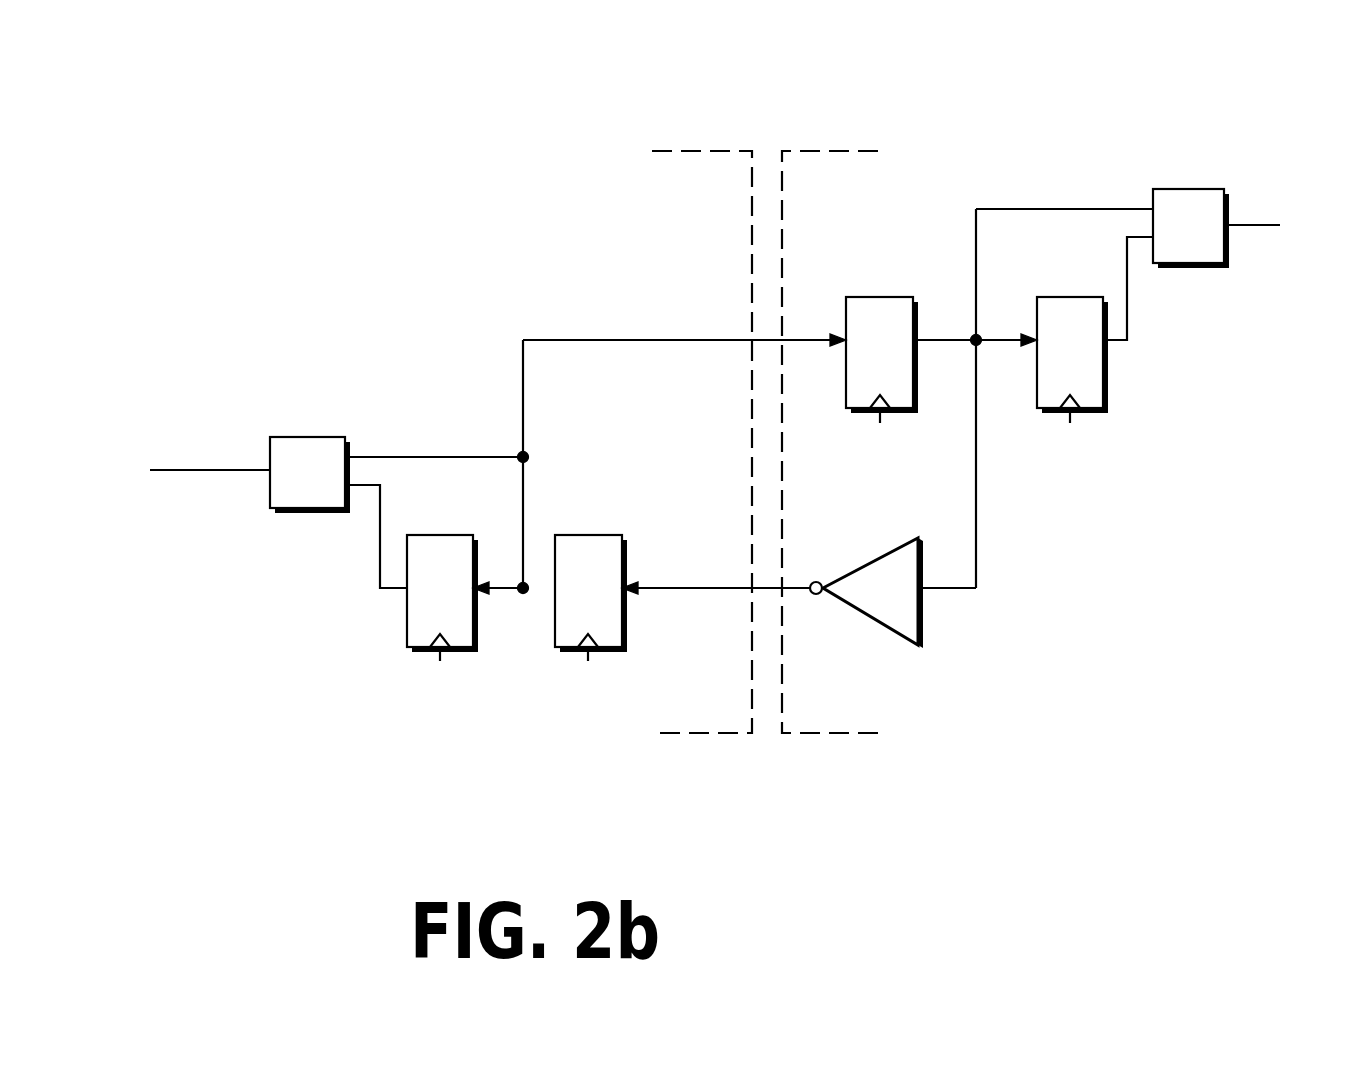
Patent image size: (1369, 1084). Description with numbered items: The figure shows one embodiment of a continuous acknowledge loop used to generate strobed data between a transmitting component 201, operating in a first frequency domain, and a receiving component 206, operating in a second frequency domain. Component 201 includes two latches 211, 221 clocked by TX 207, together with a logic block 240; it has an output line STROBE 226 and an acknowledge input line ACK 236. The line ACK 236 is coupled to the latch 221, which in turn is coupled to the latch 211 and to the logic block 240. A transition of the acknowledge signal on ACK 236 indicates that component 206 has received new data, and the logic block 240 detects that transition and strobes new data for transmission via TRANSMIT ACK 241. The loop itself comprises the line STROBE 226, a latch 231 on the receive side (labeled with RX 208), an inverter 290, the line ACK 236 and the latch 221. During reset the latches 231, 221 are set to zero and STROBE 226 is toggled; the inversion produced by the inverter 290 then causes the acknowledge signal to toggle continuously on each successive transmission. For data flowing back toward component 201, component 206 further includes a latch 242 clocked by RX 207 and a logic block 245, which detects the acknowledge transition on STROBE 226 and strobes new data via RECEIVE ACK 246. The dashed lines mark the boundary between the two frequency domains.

The component 201 is at (410, 201).
The component 206 is at (1100, 140).
The TX / RX clock 207 is at (756, 559).
The RX clock 208 is at (882, 444).
The latch 211 is at (455, 535).
The latch 221 is at (605, 535).
The STROBE 226 is at (684, 330).
The latch 231 is at (877, 297).
The ACK 236 is at (716, 575).
The logic block 240 is at (328, 437).
The TRANSMIT ACK 241 is at (204, 428).
The latch 242 is at (1048, 297).
The logic block 245 is at (1175, 189).
The RECEIVE ACK 246 is at (1284, 198).
The inverter 290 is at (862, 614).